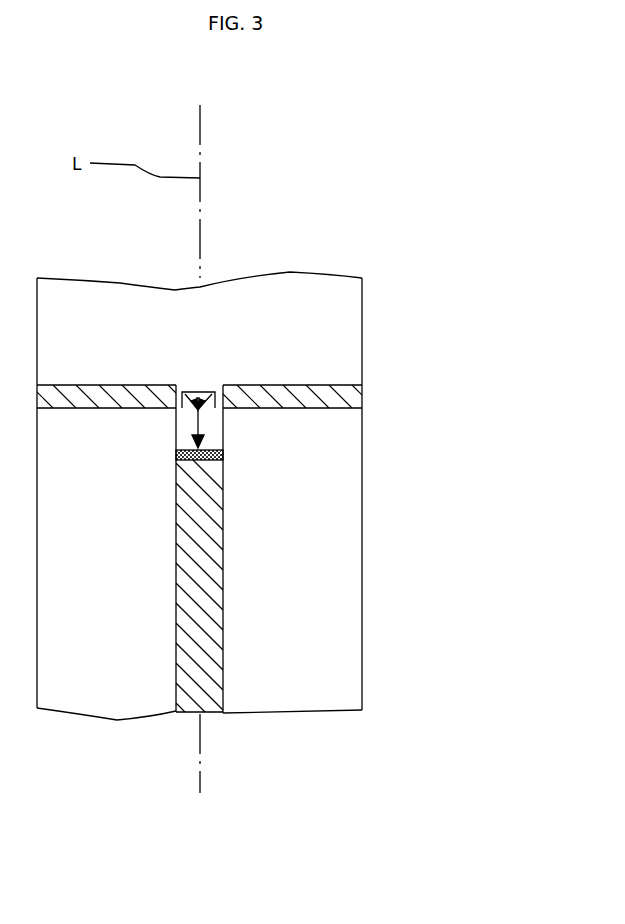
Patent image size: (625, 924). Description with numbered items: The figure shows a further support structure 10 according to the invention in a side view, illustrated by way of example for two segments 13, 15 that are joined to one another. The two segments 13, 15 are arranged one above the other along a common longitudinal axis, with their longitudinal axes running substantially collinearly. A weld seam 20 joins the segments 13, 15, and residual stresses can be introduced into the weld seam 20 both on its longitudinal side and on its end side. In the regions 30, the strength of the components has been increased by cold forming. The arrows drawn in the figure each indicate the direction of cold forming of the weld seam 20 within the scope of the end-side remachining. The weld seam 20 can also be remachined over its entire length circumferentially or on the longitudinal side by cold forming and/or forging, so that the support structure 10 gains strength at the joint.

The support structure 10 is at (412, 128).
The segment 13 is at (318, 310).
The segment 15 is at (310, 574).
The weld seam 20 is at (200, 715).
The region of increased strength 30 is at (220, 385).